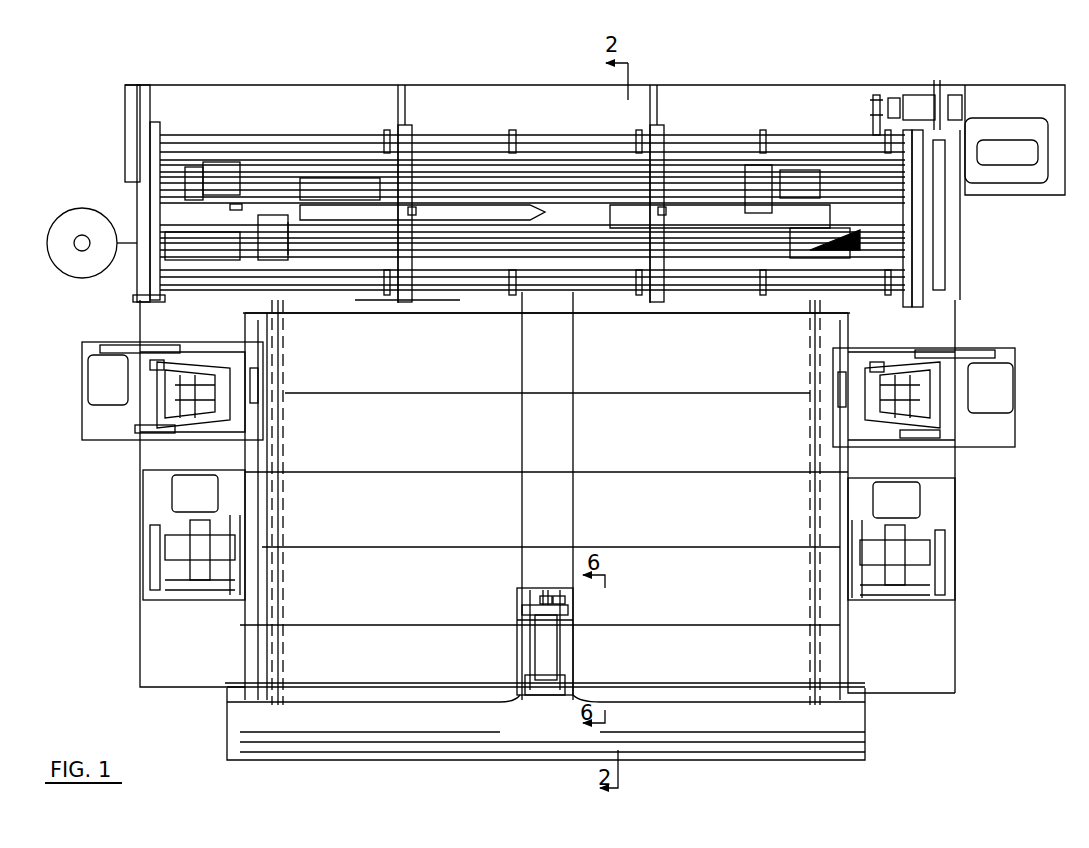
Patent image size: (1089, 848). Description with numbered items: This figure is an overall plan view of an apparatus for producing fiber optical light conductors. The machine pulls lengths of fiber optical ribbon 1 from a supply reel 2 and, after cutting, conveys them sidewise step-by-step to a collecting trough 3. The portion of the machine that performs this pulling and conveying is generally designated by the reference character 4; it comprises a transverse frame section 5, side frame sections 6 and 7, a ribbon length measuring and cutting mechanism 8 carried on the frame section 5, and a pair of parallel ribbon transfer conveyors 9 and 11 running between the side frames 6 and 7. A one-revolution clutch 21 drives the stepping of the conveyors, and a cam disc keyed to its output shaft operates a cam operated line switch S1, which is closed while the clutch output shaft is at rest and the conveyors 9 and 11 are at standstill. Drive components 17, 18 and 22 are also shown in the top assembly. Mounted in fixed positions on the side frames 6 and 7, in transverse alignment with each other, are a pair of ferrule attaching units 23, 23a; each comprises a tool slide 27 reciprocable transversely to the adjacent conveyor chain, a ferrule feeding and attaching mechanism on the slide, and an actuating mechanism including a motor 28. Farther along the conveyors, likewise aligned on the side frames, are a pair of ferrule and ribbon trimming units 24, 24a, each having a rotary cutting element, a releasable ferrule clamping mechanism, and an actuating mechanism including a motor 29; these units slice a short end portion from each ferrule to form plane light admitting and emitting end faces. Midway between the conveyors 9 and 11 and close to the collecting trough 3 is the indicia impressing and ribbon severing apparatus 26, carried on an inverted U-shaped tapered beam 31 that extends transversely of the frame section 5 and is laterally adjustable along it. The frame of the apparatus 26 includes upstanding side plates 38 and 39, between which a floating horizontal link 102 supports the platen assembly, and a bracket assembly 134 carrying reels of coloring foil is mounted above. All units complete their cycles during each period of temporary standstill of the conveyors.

The fiber optical ribbon 1 is at (398, 393).
The supply reel 2 is at (80, 283).
The collecting trough 3 is at (865, 733).
The ribbon pulling and conveying portion 4 is at (355, 302).
The transverse frame section 5 is at (524, 85).
The side frame section 6 is at (958, 323).
The side frame section 7 is at (140, 330).
The ribbon length measuring and cutting mechanism 8 is at (606, 220).
The ribbon transfer conveyor 9 is at (808, 525).
The ribbon transfer conveyor 11 is at (283, 522).
The drive unit 17 is at (285, 254).
The drive unit 18 is at (770, 194).
The one-revolution clutch 21 is at (912, 95).
The coupling 22 is at (873, 118).
The ferrule attaching unit 23 is at (1015, 403).
The ferrule attaching unit 23a is at (82, 412).
The ferrule and ribbon trimming unit 24 is at (948, 613).
The ferrule and ribbon trimming unit 24a is at (155, 608).
The indicia impressing and ribbon severing apparatus 26 is at (516, 600).
The tool slide 27 is at (203, 355).
The motor 28 is at (118, 391).
The motor 29 is at (208, 504).
The inverted U-shaped tapered beam 31 is at (573, 443).
The side plate 38 is at (573, 610).
The side plate 39 is at (524, 615).
The floating horizontal link 102 is at (544, 592).
The bracket assembly 134 is at (573, 667).
The cam operated line switch S1 is at (958, 95).